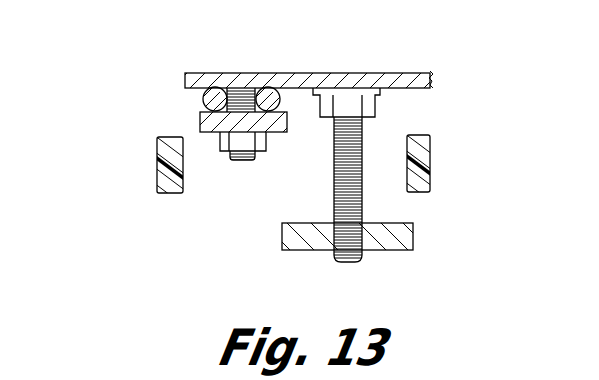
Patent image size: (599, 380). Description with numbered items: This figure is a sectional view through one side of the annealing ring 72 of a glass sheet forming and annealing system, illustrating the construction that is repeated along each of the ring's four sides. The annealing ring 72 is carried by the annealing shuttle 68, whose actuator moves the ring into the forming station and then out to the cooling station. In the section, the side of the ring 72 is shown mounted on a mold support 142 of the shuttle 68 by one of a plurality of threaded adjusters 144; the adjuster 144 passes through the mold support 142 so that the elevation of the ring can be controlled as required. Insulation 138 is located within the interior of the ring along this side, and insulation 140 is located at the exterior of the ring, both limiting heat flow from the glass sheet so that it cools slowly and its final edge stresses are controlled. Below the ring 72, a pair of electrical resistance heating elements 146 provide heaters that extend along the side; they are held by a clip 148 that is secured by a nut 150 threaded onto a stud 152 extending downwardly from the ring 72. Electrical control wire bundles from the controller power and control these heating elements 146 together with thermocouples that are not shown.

The annealing shuttle 68 is at (372, 258).
The annealing ring 72 is at (321, 74).
The insulation 138 is at (157, 165).
The insulation 140 is at (430, 164).
The mold support 142 is at (282, 246).
The threaded adjusters 144 is at (373, 182).
The electrical resistance heating elements 146 is at (262, 74).
The clip 148 is at (200, 118).
The nut 150 is at (265, 144).
The stud 152 is at (240, 162).